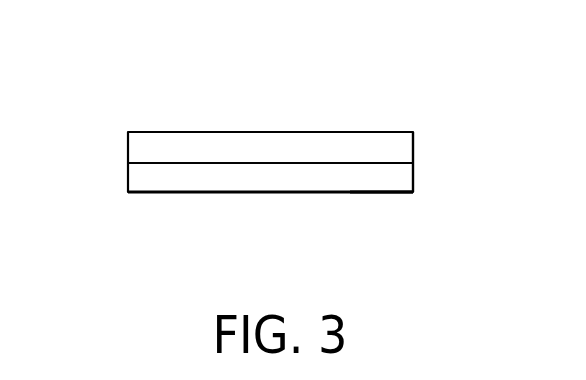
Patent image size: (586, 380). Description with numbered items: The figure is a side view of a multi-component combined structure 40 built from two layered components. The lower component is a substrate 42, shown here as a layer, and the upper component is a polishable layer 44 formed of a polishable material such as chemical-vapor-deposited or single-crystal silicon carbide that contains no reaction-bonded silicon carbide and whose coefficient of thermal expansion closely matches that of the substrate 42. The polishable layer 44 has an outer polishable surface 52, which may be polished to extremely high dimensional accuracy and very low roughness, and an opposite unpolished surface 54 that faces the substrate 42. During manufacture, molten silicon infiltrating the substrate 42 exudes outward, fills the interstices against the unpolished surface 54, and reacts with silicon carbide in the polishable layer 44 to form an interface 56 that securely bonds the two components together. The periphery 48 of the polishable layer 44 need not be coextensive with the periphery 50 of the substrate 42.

The multi-component combined structure 40 is at (366, 90).
The substrate 42 is at (192, 180).
The polishable layer 44 is at (325, 150).
The periphery of the polishable layer 48 is at (128, 148).
The periphery of the substrate 50 is at (413, 174).
The polishable surface 52 is at (198, 132).
The unpolished surface 54 is at (383, 163).
The interface 56 is at (265, 163).